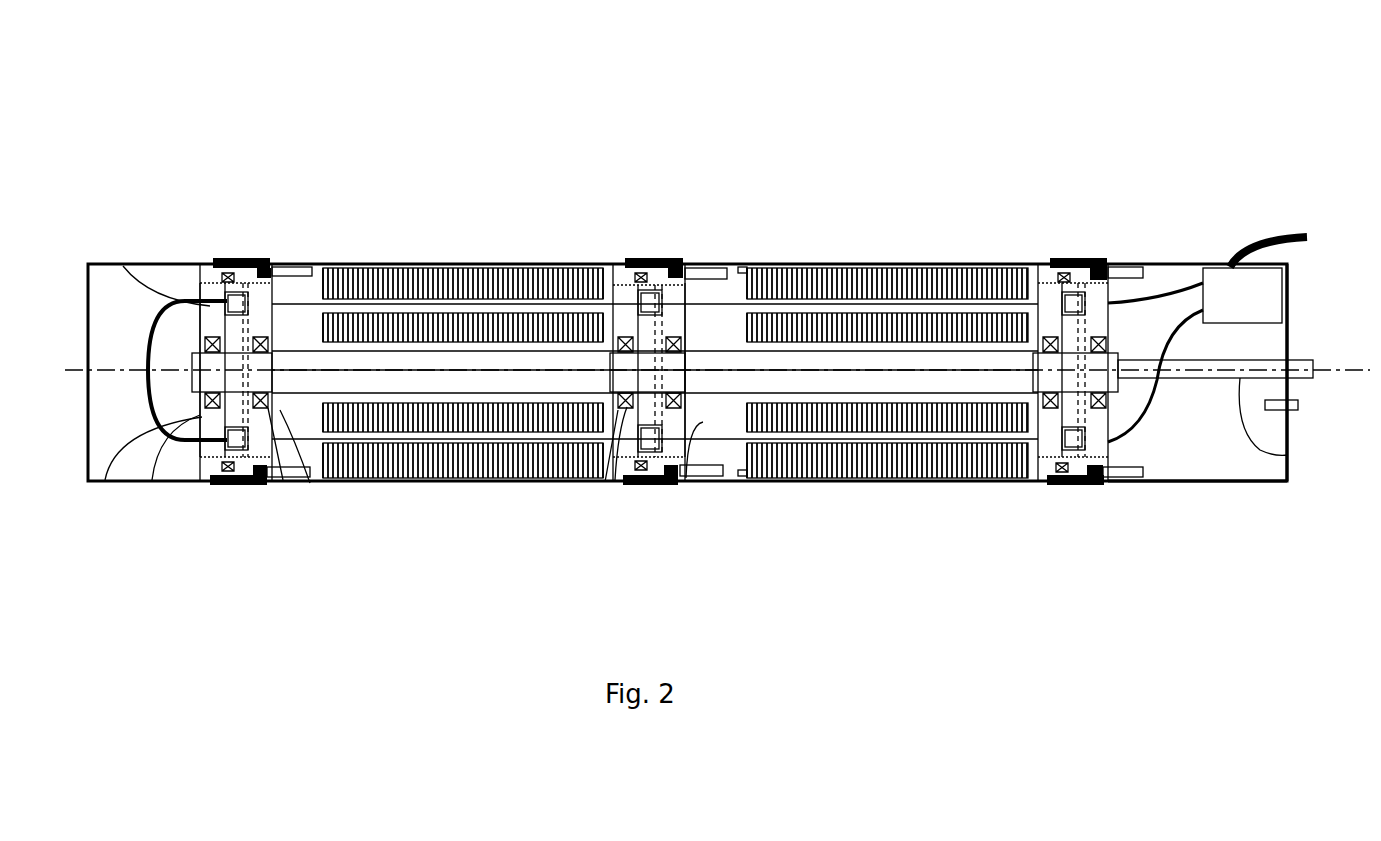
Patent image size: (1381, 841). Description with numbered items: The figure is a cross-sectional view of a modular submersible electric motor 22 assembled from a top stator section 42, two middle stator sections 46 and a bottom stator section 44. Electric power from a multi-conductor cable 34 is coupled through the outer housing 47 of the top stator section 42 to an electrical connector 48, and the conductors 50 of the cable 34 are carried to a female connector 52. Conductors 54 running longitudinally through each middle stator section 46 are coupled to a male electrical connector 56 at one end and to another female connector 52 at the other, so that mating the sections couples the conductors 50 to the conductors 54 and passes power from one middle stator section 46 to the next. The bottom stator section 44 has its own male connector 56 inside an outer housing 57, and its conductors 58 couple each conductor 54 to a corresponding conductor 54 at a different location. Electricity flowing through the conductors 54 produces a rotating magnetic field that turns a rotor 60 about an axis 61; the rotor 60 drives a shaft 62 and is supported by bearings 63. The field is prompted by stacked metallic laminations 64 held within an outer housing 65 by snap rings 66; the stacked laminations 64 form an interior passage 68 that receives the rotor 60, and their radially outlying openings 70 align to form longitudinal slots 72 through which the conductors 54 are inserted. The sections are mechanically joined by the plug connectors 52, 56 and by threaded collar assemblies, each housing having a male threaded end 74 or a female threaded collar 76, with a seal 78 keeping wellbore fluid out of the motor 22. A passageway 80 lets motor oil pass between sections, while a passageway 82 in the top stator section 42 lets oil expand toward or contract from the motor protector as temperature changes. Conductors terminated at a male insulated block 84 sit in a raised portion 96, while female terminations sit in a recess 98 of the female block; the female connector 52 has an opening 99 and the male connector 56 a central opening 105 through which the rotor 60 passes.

The submersible electric motor 22 is at (823, 90).
The multi-conductor cable 34 is at (1270, 232).
The top stator section 42 is at (1182, 253).
The bottom stator section 44 is at (160, 254).
The middle stator section 46 is at (507, 251).
The outer housing 47 is at (1205, 482).
The electrical connector 48 is at (1267, 292).
The conductors 50 is at (1165, 292).
The female connector 52 is at (310, 483).
The conductors 54 is at (385, 262).
The male electrical connector 56 is at (112, 478).
The outer housing 57 is at (130, 485).
The conductors 58 is at (155, 480).
The rotor 60 is at (392, 383).
The axis 61 is at (1338, 362).
The shaft 62 is at (1288, 455).
The bearings 63 is at (283, 480).
The metallic laminations 64 is at (918, 275).
The outer housing 65 is at (492, 480).
The snap rings 66 is at (316, 264).
The interior passage 68 is at (428, 350).
The openings 70 is at (742, 435).
The longitudinal slots 72 is at (912, 482).
The male threaded end 74 is at (205, 480).
The female threaded collar 76 is at (245, 480).
The seal 78 is at (228, 262).
The passageway 80 is at (262, 322).
The passageway 82 is at (1300, 404).
The male insulated block 84 is at (207, 322).
The raised portion 96 is at (120, 262).
The recess 98 is at (248, 297).
The opening 99 is at (692, 355).
The central opening 105 is at (620, 378).